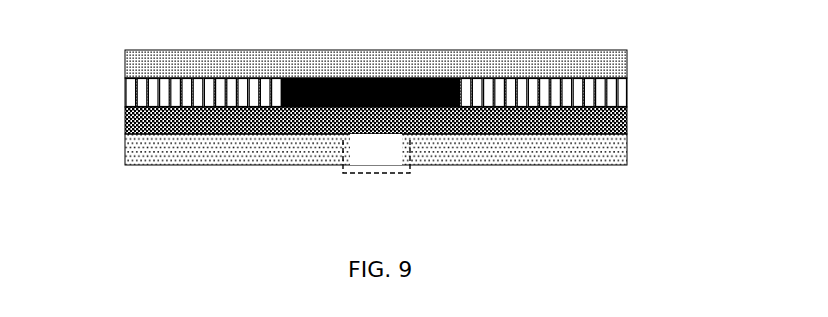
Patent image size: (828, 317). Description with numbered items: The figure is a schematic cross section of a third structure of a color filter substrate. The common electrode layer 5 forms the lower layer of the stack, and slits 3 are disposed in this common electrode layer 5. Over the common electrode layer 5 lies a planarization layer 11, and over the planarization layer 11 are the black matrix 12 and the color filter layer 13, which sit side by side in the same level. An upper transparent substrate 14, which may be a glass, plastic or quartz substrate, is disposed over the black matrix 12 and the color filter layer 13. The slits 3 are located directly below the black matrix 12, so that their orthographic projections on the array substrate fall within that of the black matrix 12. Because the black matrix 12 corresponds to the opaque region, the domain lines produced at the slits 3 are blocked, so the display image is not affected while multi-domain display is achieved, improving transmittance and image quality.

The upper transparent substrate 14 is at (627, 65).
The color filter layer 13 is at (125, 93).
The black matrix 12 is at (368, 78).
The planarization layer 11 is at (627, 120).
The common electrode layer 5 is at (125, 148).
The slits 3 is at (388, 175).